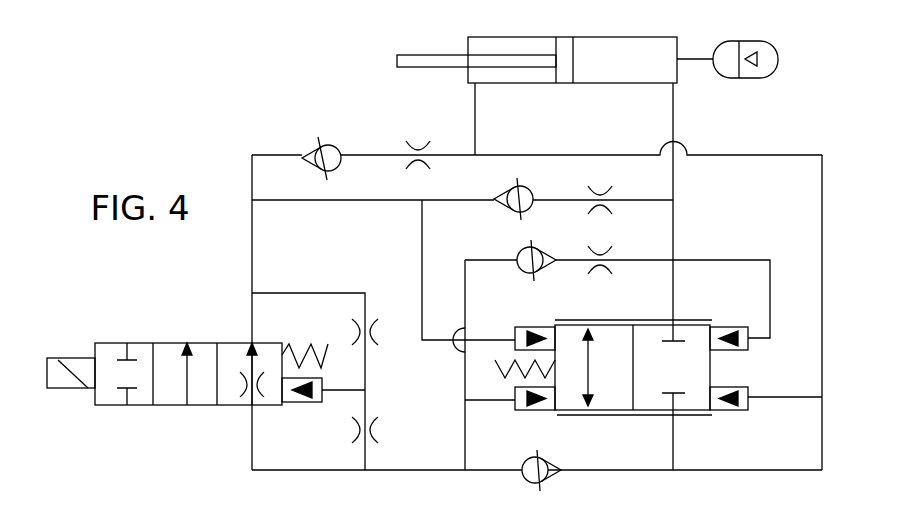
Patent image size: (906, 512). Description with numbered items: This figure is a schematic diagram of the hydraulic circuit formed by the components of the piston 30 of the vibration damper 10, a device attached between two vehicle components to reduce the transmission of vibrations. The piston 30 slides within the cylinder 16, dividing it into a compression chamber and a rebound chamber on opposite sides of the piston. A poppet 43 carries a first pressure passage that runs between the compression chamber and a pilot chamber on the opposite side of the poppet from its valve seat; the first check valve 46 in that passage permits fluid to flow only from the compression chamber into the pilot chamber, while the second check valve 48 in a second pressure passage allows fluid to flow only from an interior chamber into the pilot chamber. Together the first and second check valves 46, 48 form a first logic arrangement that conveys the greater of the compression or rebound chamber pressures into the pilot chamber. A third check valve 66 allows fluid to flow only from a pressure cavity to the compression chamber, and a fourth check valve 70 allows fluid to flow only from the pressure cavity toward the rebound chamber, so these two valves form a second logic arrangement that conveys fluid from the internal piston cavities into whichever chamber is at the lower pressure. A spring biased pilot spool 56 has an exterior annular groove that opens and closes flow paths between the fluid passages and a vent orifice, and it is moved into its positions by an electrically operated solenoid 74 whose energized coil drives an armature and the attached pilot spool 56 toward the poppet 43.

The vibration damper 10 is at (347, 88).
The cylinder 16 is at (647, 83).
The piston 30 is at (567, 80).
The poppet 43 is at (690, 322).
The first check valve 46 is at (517, 265).
The second check valve 48 is at (553, 456).
The pilot spool 56 is at (233, 342).
The third check valve 66 is at (508, 213).
The fourth check valve 70 is at (313, 152).
The solenoid 74 is at (85, 359).